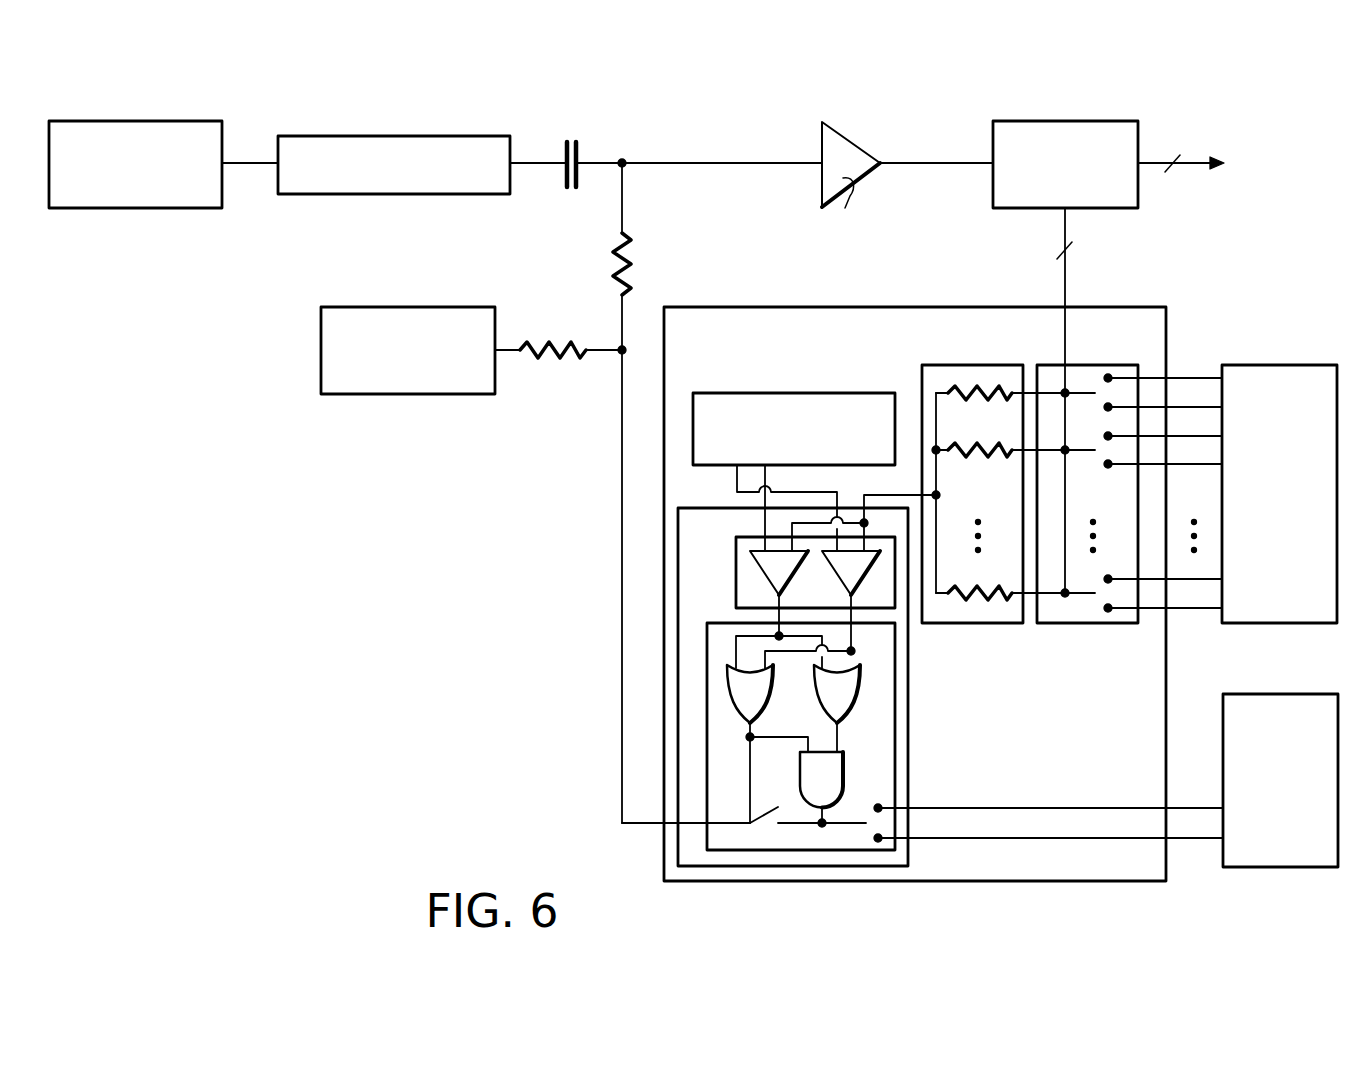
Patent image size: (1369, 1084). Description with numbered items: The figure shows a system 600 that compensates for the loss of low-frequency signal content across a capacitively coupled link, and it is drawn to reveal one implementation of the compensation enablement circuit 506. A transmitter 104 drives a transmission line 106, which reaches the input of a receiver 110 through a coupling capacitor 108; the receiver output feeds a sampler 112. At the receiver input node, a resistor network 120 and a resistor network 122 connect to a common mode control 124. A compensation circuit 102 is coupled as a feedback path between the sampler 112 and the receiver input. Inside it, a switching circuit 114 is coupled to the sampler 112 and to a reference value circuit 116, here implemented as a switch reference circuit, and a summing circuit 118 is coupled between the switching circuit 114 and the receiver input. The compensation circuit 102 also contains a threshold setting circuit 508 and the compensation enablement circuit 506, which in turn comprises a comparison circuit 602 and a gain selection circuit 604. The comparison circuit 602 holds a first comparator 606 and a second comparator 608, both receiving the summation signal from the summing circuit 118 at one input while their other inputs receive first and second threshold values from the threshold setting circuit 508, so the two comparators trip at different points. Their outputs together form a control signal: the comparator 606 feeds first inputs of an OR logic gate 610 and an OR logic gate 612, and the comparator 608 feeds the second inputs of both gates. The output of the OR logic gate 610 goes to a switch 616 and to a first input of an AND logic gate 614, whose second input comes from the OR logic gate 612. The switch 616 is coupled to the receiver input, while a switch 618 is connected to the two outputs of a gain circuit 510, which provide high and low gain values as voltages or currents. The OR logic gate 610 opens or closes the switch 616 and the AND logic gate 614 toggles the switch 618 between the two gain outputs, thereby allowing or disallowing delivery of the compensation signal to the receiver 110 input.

The system 600 is at (1280, 122).
The transmitter 104 is at (163, 121).
The transmission line 106 is at (417, 136).
The coupling capacitor 108 is at (577, 142).
The receiver 110 is at (848, 141).
The sampler 112 is at (1083, 121).
The resistor network 120 is at (634, 257).
The resistor network 122 is at (544, 340).
The common mode control 124 is at (430, 307).
The compensation circuit 102 is at (772, 307).
The threshold setting circuit 508 is at (730, 393).
The compensation enablement circuit 506 is at (678, 534).
The comparison circuit 602 is at (736, 560).
The first comparator 606 is at (761, 574).
The second comparator 608 is at (842, 581).
The gain selection circuit 604 is at (895, 730).
The OR logic gate 610 is at (738, 710).
The OR logic gate 612 is at (813, 688).
The AND logic gate 614 is at (846, 779).
The switch 616 is at (773, 828).
The switch 618 is at (851, 828).
The summing circuit 118 is at (972, 626).
The switching circuit 114 is at (1087, 626).
The reference value circuit 116 is at (1262, 564).
The gain circuit 510 is at (1262, 837).